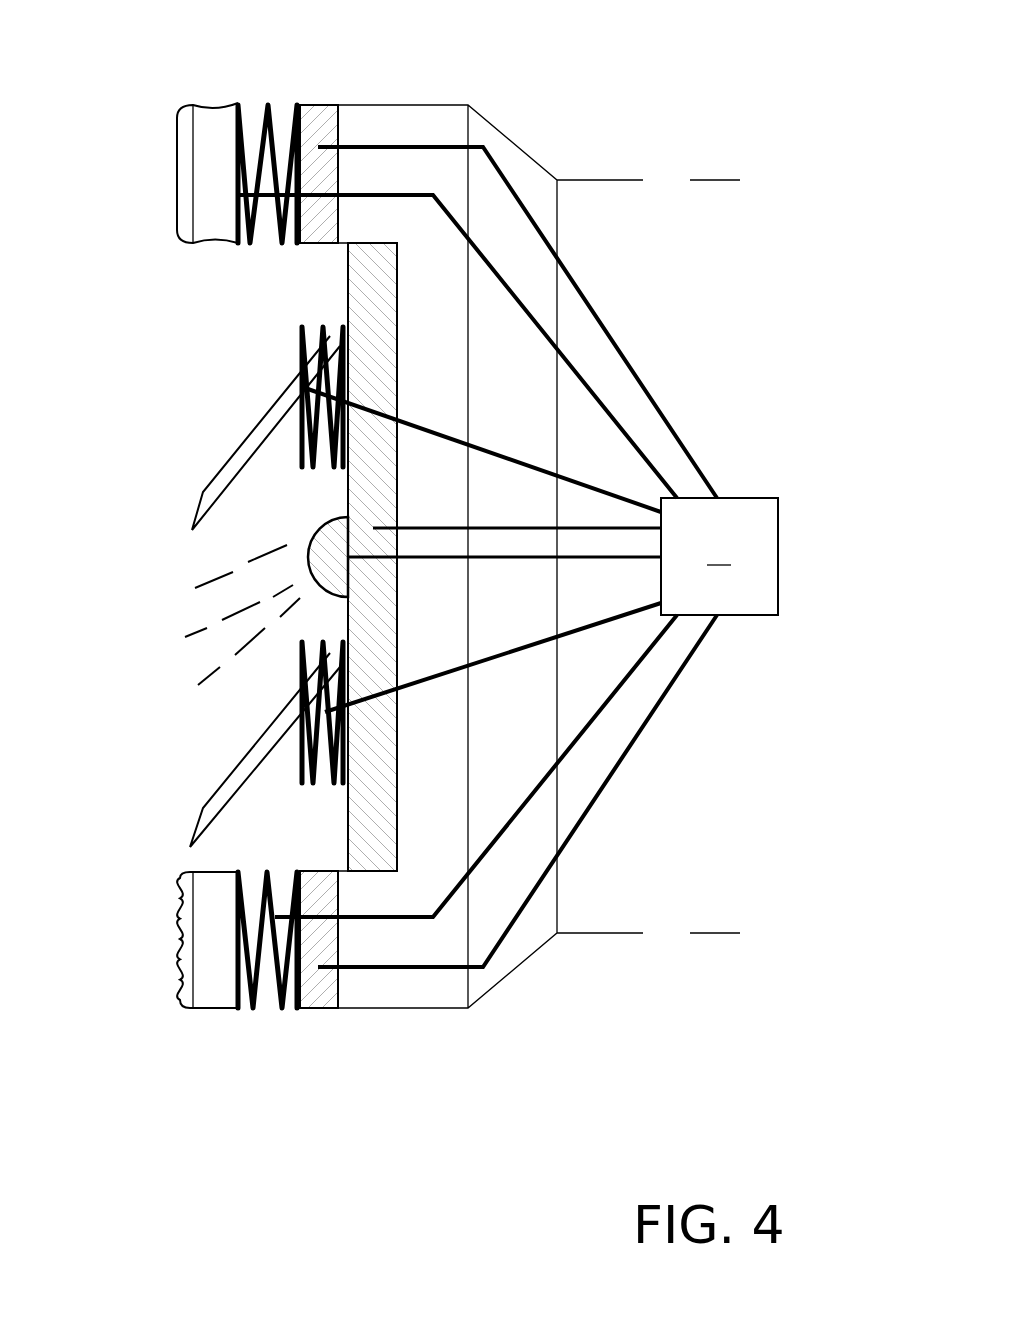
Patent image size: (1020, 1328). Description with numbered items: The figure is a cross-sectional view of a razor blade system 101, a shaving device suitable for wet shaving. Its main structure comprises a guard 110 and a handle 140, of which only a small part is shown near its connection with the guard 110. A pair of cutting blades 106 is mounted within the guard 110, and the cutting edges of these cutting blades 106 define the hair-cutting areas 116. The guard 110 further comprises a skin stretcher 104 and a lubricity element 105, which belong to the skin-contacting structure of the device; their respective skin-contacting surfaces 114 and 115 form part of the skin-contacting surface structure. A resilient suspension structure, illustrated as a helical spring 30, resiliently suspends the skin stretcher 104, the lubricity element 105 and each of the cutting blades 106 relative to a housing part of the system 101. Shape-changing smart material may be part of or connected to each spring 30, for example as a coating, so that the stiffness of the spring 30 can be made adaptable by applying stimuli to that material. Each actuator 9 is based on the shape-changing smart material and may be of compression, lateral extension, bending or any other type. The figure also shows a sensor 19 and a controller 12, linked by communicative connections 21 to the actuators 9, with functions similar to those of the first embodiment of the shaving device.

The razor blade system 101 is at (579, 75).
The guard 110 is at (482, 1014).
The handle 140 is at (675, 961).
The actuator 9 is at (318, 120).
The sensor 19 is at (328, 545).
The helical spring 30 is at (267, 105).
The lubricity element 105 is at (175, 100).
The skin-contacting surface of the lubricity element 115 is at (177, 175).
The skin stretcher 104 is at (176, 1011).
The skin-contacting surface of the skin stretcher 114 is at (180, 940).
The cutting blade 106 is at (260, 435).
The hair-cutting area 116 is at (188, 530).
The controller 12 is at (719, 556).
The communicative connection 21 is at (610, 527).